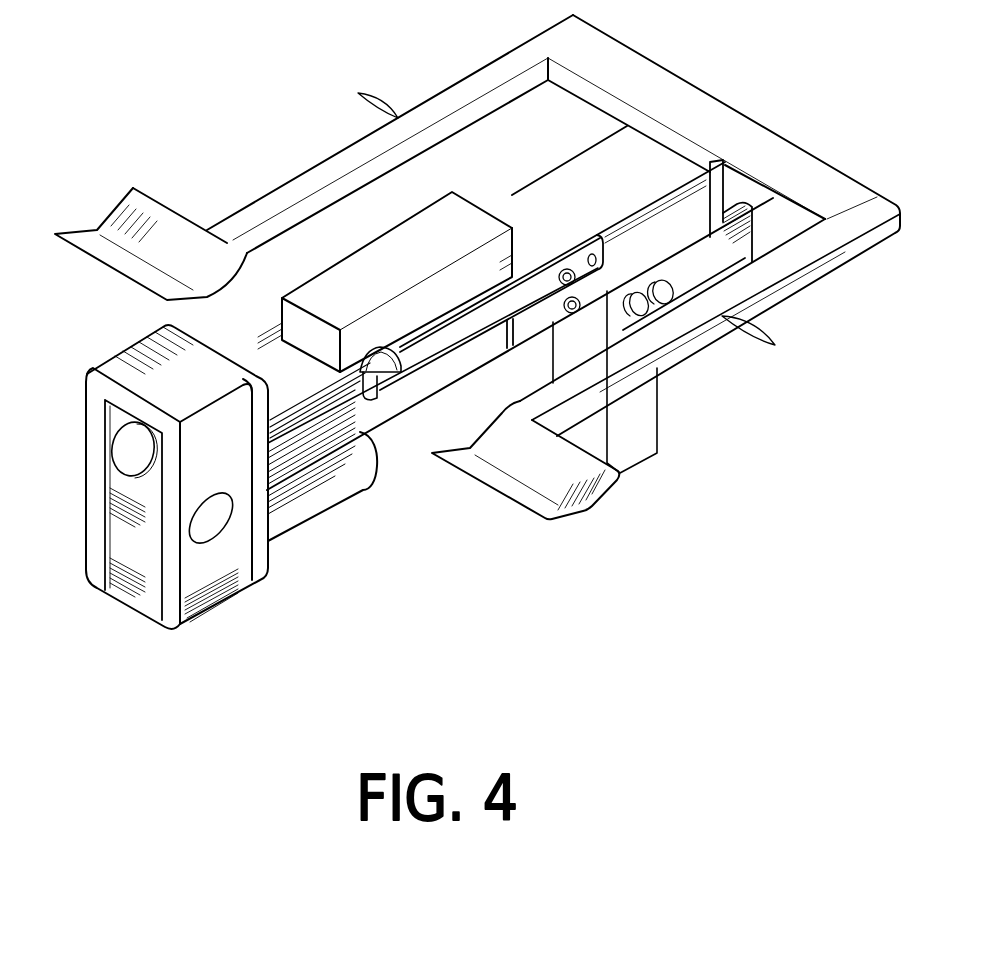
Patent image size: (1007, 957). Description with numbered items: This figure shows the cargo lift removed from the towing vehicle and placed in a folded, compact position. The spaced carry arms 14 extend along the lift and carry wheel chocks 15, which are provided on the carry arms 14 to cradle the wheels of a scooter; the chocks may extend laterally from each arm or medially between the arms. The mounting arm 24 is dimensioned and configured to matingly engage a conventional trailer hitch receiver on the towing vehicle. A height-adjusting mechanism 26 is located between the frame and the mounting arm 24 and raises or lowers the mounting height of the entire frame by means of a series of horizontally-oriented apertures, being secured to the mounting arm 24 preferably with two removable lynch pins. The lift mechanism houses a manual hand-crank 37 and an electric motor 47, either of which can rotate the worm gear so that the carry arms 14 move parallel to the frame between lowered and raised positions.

The carry arms 14 is at (822, 277).
The wheel chocks 15 is at (605, 499).
The mounting arm 24 is at (753, 227).
The height-adjusting mechanism 26 is at (647, 305).
The manual hand-crank 37 is at (205, 527).
The electric motor 47 is at (152, 477).